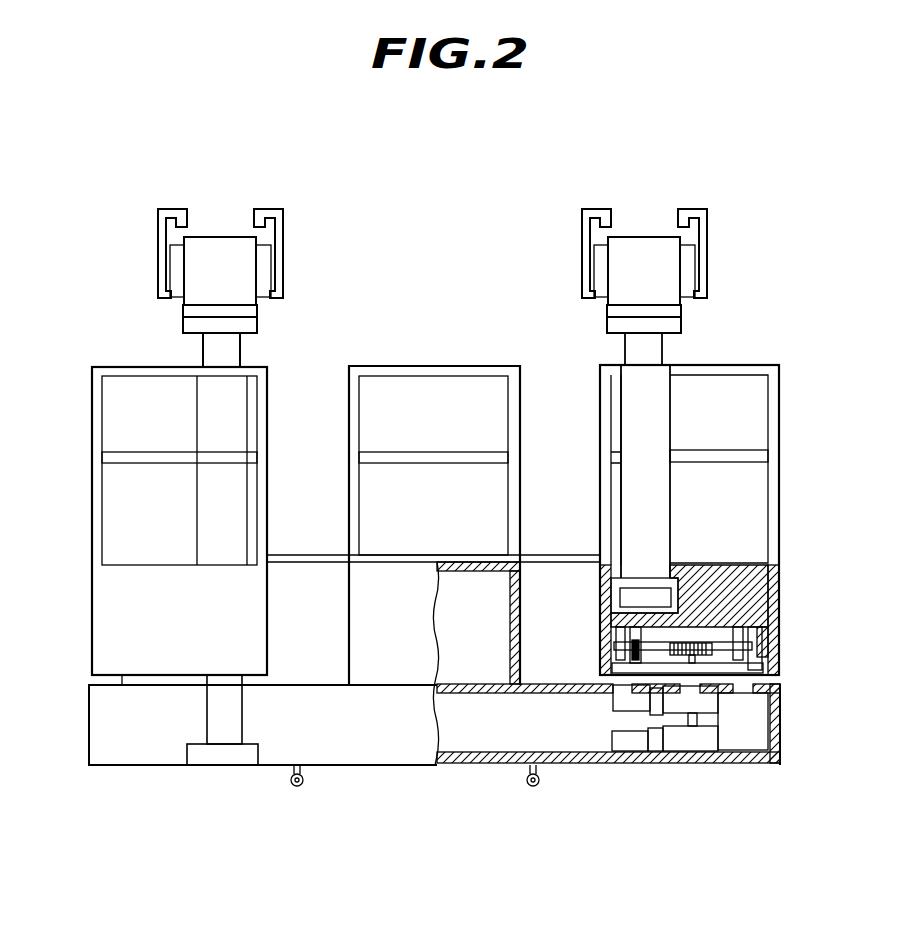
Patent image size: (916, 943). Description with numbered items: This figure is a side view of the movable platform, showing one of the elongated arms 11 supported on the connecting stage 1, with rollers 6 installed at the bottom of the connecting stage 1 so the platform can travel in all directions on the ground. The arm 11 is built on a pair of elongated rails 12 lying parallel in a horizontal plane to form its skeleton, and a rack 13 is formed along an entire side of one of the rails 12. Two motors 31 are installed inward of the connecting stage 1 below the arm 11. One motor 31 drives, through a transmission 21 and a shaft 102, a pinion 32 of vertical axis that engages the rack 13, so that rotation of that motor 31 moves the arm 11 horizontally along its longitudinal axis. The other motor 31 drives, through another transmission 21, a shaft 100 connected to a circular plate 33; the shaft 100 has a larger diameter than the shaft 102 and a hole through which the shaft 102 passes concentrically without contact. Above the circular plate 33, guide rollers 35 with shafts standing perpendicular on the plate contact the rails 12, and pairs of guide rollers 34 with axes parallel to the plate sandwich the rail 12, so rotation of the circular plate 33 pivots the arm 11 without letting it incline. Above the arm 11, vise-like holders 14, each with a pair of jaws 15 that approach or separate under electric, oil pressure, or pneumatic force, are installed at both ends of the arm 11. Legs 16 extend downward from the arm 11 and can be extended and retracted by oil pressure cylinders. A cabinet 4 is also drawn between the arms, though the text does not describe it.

The connecting stage 1 is at (437, 765).
The intermediate cabinet 4 is at (428, 366).
The rollers 6 is at (292, 785).
The arm 11 is at (103, 607).
The rails 12 is at (666, 600).
The rack 13 is at (700, 590).
The holder 14 is at (224, 246).
The jaws 15 is at (166, 212).
The legs 16 is at (210, 718).
The transmission 21 is at (712, 701).
The motors 31 is at (621, 704).
The pinion 32 is at (730, 568).
The circular plate 33 is at (760, 673).
The guide rollers 34 is at (752, 625).
The guide rollers 35 is at (765, 645).
The shaft 100 is at (713, 678).
The shaft 102 is at (697, 726).